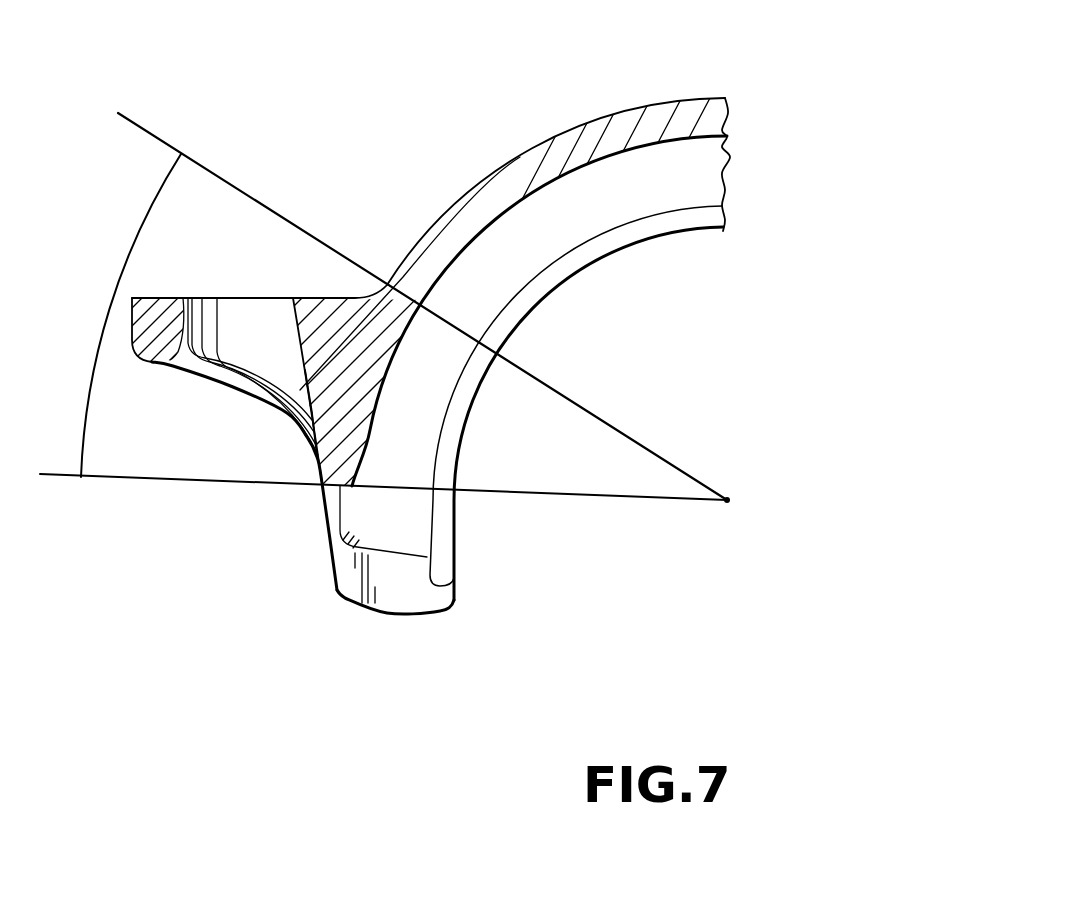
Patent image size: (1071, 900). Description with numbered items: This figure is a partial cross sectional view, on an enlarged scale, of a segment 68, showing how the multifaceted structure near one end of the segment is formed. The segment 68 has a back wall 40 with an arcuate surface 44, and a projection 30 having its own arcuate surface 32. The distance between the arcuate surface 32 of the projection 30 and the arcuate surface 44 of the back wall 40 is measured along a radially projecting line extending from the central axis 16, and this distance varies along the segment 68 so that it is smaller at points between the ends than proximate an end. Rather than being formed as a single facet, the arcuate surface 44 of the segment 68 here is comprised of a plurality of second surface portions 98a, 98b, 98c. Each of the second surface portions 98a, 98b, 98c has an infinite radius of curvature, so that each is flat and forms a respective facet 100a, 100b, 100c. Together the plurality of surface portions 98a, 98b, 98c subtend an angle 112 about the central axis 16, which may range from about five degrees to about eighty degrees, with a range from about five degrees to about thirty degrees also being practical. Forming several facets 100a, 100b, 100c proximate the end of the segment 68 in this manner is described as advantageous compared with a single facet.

The central axis 16 is at (727, 502).
The projection 30 is at (698, 218).
The arcuate surface of the projection 32 is at (656, 242).
The back wall 40 is at (605, 115).
The arcuate surface of the back wall 44 is at (703, 141).
The segment 68 is at (705, 54).
The second surface portion 98a is at (317, 457).
The second surface portion 98b is at (310, 403).
The second surface portion 98c is at (310, 366).
The facet 100a is at (320, 444).
The facet 100b is at (312, 392).
The facet 100c is at (305, 368).
The angle 112 is at (124, 263).